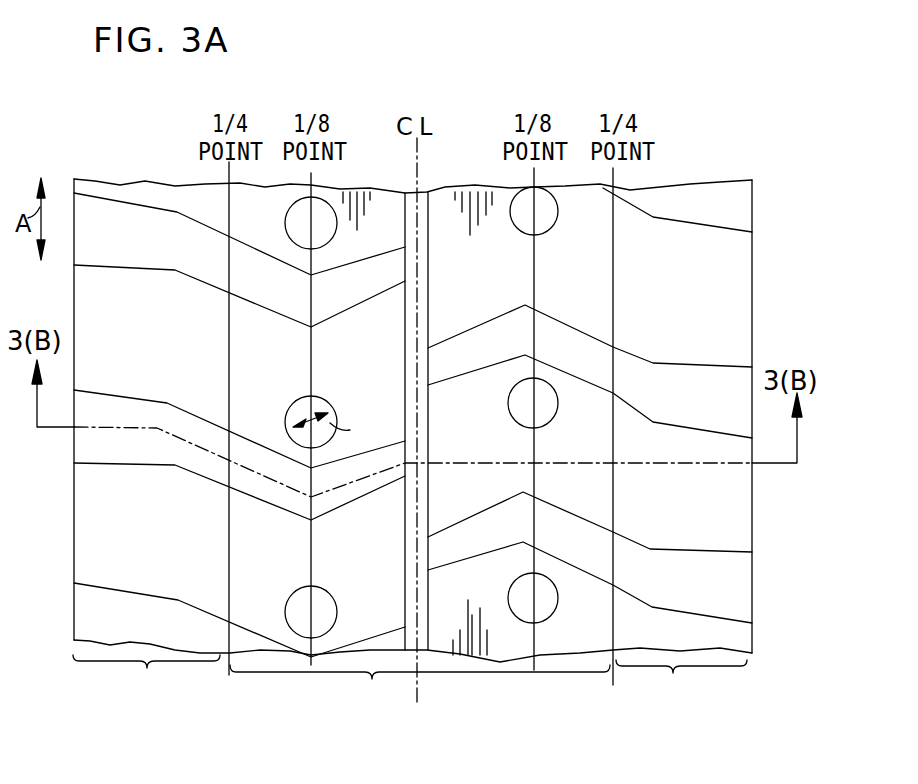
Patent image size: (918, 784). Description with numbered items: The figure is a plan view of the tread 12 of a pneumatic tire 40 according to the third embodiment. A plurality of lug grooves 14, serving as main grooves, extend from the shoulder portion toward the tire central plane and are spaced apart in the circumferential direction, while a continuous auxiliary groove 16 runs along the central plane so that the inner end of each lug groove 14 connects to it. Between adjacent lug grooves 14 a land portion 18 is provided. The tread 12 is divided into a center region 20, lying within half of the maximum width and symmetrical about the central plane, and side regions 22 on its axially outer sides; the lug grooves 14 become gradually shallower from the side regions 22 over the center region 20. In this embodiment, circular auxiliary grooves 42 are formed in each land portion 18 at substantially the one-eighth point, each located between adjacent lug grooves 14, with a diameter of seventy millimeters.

The pneumatic tire 40 is at (417, 405).
The tread 12 is at (685, 170).
The auxiliary groove 16 is at (424, 285).
The lug groove 14 is at (82, 446).
The land portion 18 is at (82, 502).
The circular auxiliary groove 42 is at (302, 402).
The center region 20 is at (420, 689).
The side region 22 is at (410, 680).